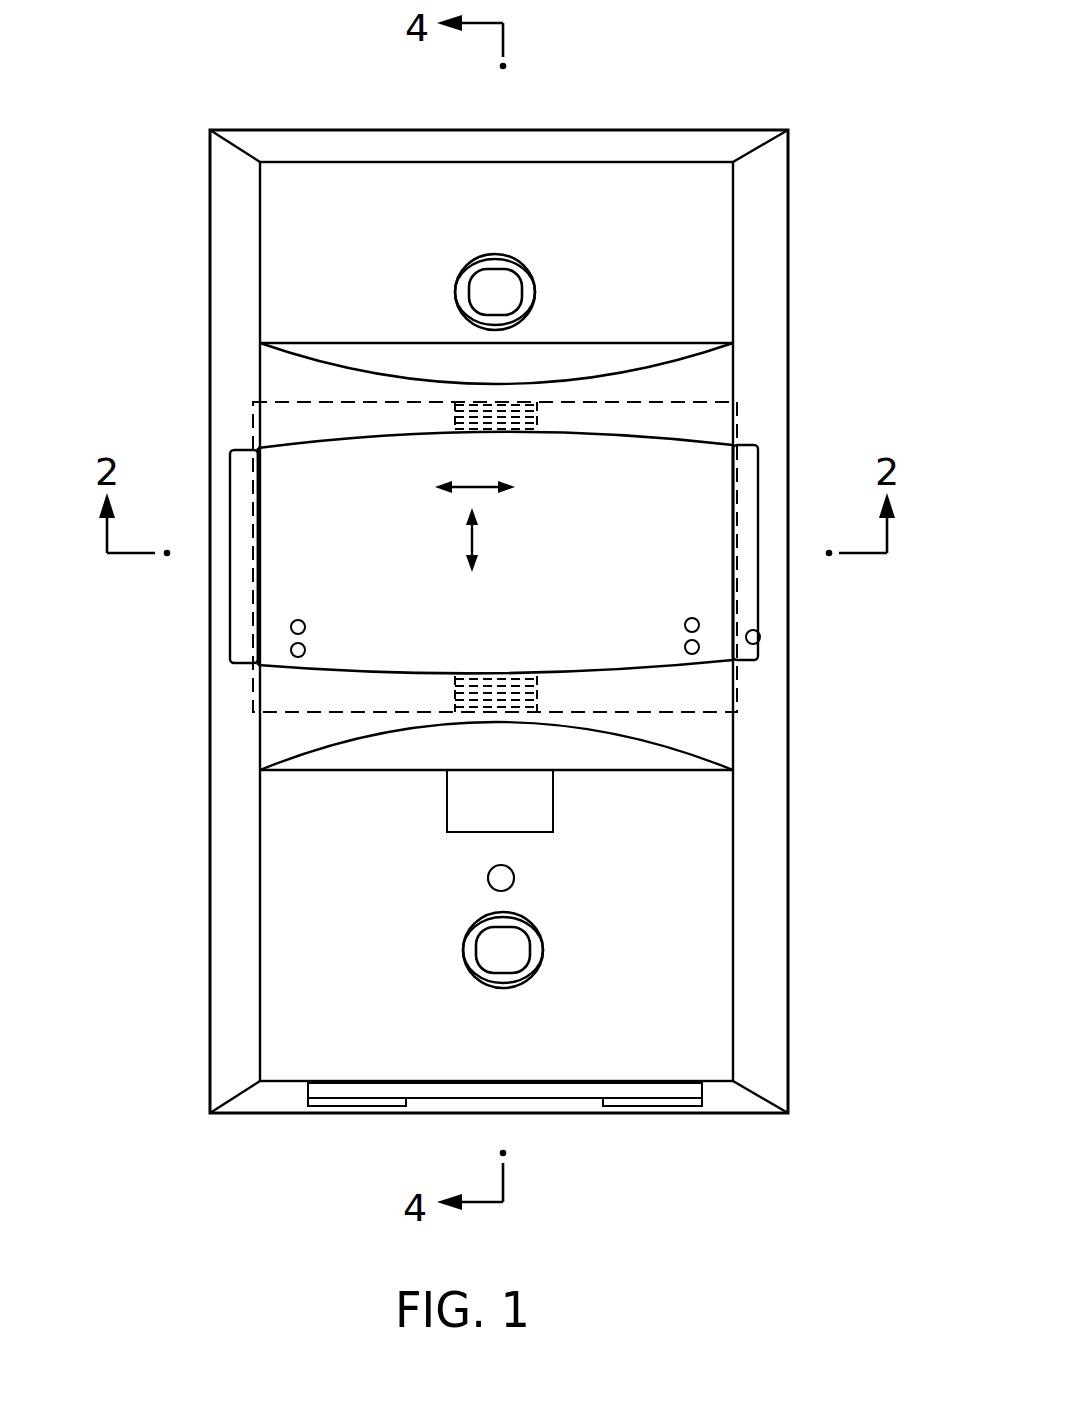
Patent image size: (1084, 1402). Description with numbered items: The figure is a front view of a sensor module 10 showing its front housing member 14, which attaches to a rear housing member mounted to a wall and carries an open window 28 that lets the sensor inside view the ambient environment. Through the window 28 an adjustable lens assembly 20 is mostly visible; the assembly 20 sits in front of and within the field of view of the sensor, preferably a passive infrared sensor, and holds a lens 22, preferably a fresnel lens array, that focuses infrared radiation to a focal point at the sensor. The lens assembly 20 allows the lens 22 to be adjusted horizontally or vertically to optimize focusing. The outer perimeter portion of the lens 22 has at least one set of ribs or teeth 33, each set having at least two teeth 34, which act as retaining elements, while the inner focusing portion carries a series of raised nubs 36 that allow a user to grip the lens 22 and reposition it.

The sensor module 10 is at (858, 223).
The front housing member 14 is at (788, 352).
The adjustable lens assembly 20 is at (760, 420).
The lens 22 is at (290, 418).
The open window 28 is at (760, 645).
The set of ribs or teeth 33 is at (440, 692).
The teeth 34 is at (537, 686).
The raised nubs 36 is at (695, 653).